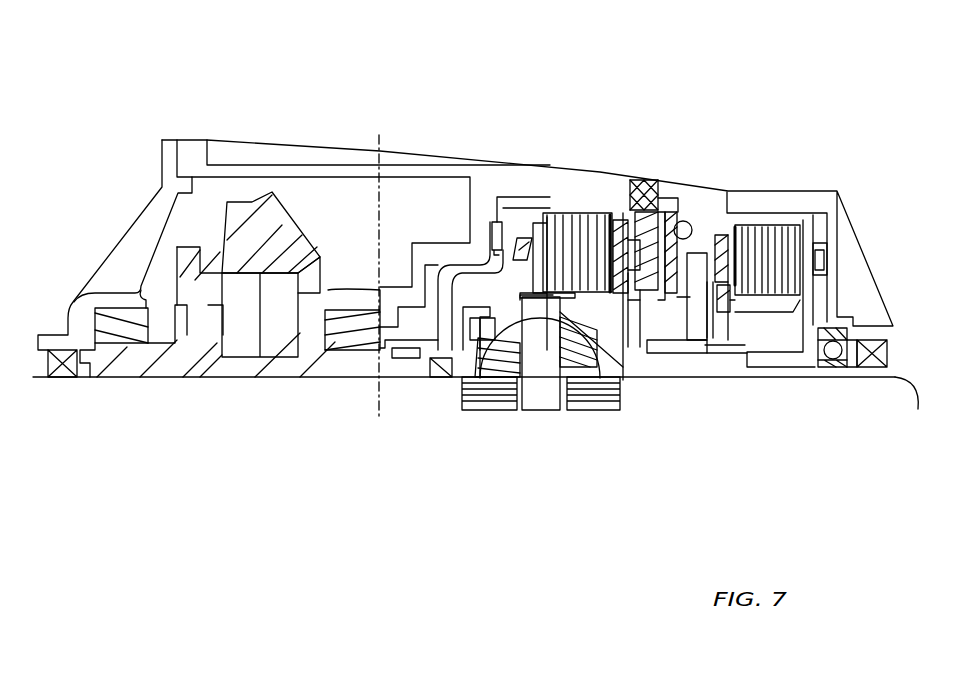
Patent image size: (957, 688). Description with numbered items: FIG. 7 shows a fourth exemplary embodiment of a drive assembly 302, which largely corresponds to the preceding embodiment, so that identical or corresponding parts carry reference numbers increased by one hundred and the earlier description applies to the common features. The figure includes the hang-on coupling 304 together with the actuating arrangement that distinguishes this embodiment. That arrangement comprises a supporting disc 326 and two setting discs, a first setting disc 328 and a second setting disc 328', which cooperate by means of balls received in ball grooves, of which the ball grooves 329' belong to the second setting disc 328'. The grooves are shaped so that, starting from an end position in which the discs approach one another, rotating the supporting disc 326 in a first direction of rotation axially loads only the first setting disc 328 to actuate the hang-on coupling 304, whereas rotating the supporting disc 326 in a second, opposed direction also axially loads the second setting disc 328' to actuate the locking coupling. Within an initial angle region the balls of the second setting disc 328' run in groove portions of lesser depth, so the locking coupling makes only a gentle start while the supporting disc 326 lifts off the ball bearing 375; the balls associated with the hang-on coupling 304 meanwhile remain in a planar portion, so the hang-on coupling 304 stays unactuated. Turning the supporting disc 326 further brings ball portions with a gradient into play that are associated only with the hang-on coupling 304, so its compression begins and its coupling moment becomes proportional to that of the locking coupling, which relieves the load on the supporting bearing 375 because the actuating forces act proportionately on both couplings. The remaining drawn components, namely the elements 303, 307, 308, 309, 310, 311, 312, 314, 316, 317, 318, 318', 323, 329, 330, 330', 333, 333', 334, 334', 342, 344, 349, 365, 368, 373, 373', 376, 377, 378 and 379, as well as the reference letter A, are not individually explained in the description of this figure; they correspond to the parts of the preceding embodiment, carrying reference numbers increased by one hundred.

The drive assembly 302 is at (192, 88).
The input shaft 303 is at (548, 430).
The hang-on coupling 304 is at (557, 192).
The planetary gear set 307 is at (275, 210).
The planet carrier 308 is at (235, 380).
The bearing 309 is at (130, 380).
The housing wall 310 is at (142, 240).
The bearing 311 is at (398, 380).
The snap ring 312 is at (516, 215).
The clutch plates 314 is at (575, 210).
The sun gear 316 is at (575, 385).
The planet gear 317 is at (523, 385).
The ring gear 318 is at (593, 416).
The ring gear 318' is at (484, 439).
The bearing 323 is at (438, 380).
The supporting disc 326 is at (680, 203).
The first setting disc 328 is at (641, 217).
The second setting disc 328' is at (729, 228).
The clutch hub 329 is at (677, 398).
The ball grooves 329' is at (689, 394).
The pressure plate 330 is at (673, 206).
The pressure plate 330' is at (721, 368).
The clutch disc 333 is at (575, 238).
The clutch disc 333' is at (767, 204).
The clutch disc 334 is at (594, 188).
The clutch disc 334' is at (768, 218).
The output hub 342 is at (730, 380).
The clutch housing 344 is at (818, 232).
The output shaft 349 is at (881, 403).
The clutch drum 365 is at (790, 192).
The piston 368 is at (815, 225).
The return spring 373 is at (631, 334).
The return spring 373' is at (751, 369).
The ball bearing 375 is at (700, 250).
The seal 376 is at (650, 205).
The bearing 377 is at (828, 258).
The snap ring 378 is at (485, 210).
The ball 379 is at (686, 220).
The axis of rotation A is at (58, 412).